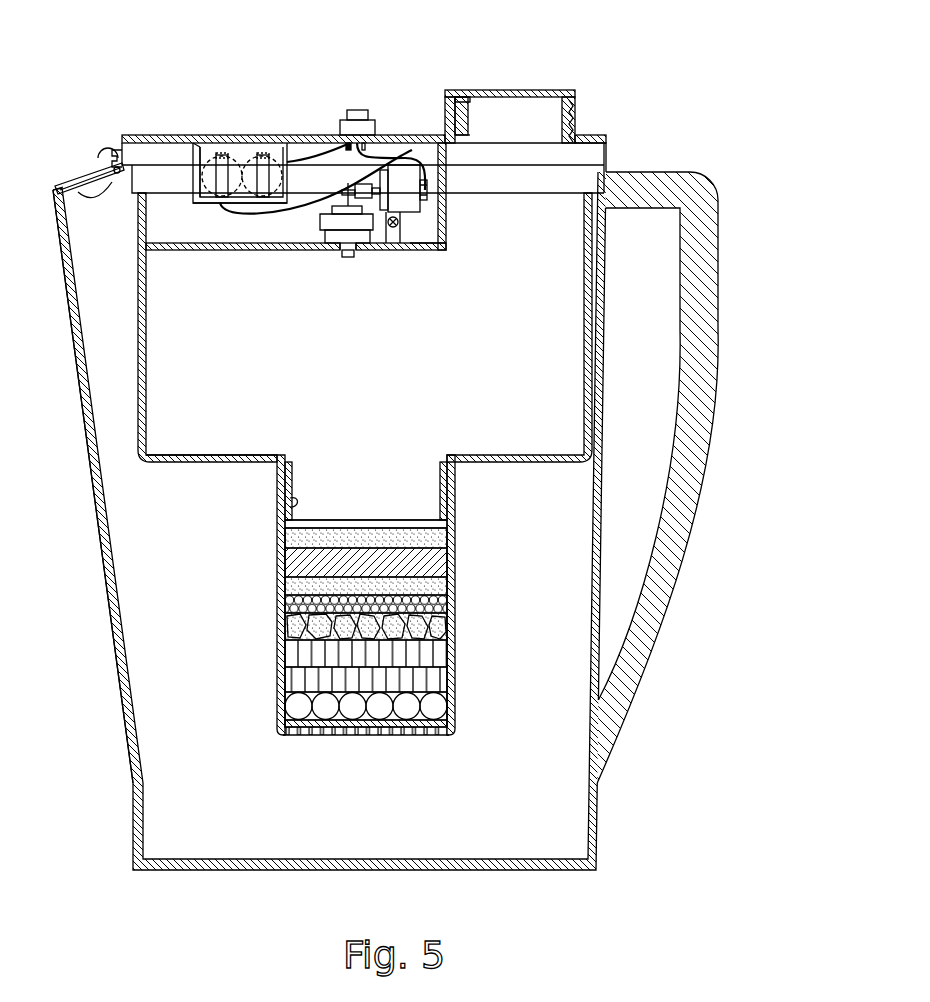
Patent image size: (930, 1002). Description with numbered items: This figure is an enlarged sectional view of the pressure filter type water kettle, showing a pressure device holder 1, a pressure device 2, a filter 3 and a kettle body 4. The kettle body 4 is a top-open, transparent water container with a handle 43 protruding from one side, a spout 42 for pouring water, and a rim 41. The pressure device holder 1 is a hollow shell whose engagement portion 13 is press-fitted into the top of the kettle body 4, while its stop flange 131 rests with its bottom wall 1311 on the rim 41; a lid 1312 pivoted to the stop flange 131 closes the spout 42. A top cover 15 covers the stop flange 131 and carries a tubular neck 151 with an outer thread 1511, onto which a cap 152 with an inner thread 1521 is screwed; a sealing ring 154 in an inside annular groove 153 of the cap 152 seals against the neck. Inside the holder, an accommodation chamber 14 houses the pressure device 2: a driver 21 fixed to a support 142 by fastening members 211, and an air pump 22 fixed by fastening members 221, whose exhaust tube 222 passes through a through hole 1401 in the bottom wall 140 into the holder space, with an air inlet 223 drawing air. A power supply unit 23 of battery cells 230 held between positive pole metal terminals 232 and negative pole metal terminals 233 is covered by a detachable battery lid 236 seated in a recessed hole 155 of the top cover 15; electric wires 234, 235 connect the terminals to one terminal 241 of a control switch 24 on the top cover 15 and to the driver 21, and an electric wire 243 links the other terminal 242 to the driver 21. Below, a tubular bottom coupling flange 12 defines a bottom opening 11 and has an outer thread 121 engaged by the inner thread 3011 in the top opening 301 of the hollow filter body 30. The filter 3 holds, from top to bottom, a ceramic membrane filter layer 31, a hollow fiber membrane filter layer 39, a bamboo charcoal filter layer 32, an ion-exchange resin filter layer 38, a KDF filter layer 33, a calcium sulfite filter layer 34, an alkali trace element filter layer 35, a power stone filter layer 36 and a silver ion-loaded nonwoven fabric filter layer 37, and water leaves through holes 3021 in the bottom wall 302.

The pressure device holder 1 is at (133, 440).
The bottom opening 11 is at (366, 519).
The tubular bottom coupling flange 12 is at (286, 497).
The outer thread 121 is at (290, 498).
The engagement portion 13 is at (122, 200).
The stop flange 131 is at (118, 168).
The bottom wall 1311 is at (122, 163).
The lid 1312 is at (70, 187).
The accommodation chamber 14 is at (447, 205).
The bottom wall 140 is at (165, 251).
The through hole 1401 is at (346, 252).
The support 142 is at (416, 251).
The top cover 15 is at (162, 135).
The tubular neck 151 is at (458, 132).
The outer thread 1511 is at (577, 124).
The cap 152 is at (567, 96).
The inner thread 1521 is at (463, 117).
The inside annular groove 153 is at (461, 96).
The sealing ring 154 is at (452, 96).
The recessed hole 155 is at (203, 146).
The pressure device 2 is at (313, 228).
The driver 21 is at (398, 221).
The fastening members 211 is at (404, 234).
The air pump 22 is at (340, 229).
The fastening members 221 is at (353, 256).
The exhaust tube 222 is at (343, 252).
The air inlet 223 is at (345, 238).
The power supply unit 23 is at (207, 204).
The battery cells 230 is at (199, 165).
The positive pole metal terminals 232 is at (256, 167).
The negative pole metal terminals 233 is at (230, 163).
The electric wire 234 is at (349, 157).
The electric wire 235 is at (243, 208).
The detachable battery lid 236 is at (278, 160).
The control switch 24 is at (347, 110).
The terminal 241 is at (342, 146).
The terminal 242 is at (361, 150).
The electric wire 243 is at (409, 150).
The filter 3 is at (264, 683).
The hollow filter body 30 is at (278, 591).
The top opening 301 is at (284, 467).
The inner thread 3011 is at (283, 512).
The bottom wall 302 is at (287, 739).
The through holes 3021 is at (307, 736).
The ceramic membrane filter layer 31 is at (450, 543).
The heavy metal chelating agent-added bamboo charcoal filter layer 32 is at (450, 587).
The grained copper-zinc alloy kinetic degradation fluxion (KDF) filter layer 33 is at (452, 619).
The grained calcium sulfite filter layer 34 is at (452, 657).
The grained alkali trace element filter layer 35 is at (449, 680).
The power stone filter layer 36 is at (452, 703).
The silver ion-loaded nonwoven fabric filter layer 37 is at (454, 728).
The fine-grained ion-exchange resin filter layer 38 is at (453, 602).
The hollow fiber membrane filter layer 39 is at (452, 567).
The kettle body 4 is at (122, 718).
The rim 41 is at (92, 190).
The spout 42 is at (78, 368).
The handle 43 is at (689, 592).